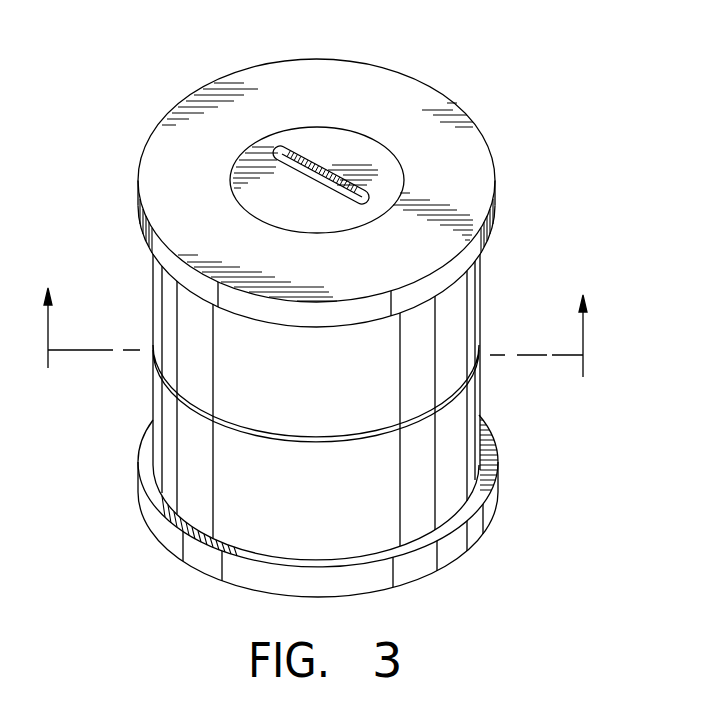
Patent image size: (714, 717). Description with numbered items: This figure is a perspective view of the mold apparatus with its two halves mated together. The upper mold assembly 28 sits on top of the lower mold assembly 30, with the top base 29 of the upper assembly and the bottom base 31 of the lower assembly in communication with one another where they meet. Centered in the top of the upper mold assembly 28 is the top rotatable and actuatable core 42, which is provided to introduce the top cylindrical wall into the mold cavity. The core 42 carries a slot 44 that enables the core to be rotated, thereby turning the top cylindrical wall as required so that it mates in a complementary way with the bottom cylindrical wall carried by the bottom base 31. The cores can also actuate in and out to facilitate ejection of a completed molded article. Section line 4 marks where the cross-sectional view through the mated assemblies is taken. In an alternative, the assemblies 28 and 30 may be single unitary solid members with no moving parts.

The upper mold assembly 28 is at (508, 157).
The top base 29 is at (443, 308).
The lower mold assembly 30 is at (517, 481).
The bottom base 31 is at (205, 432).
The top rotatable and actuatable core 42 is at (376, 160).
The slot 44 is at (317, 176).
The section line 4— 4 is at (315, 348).